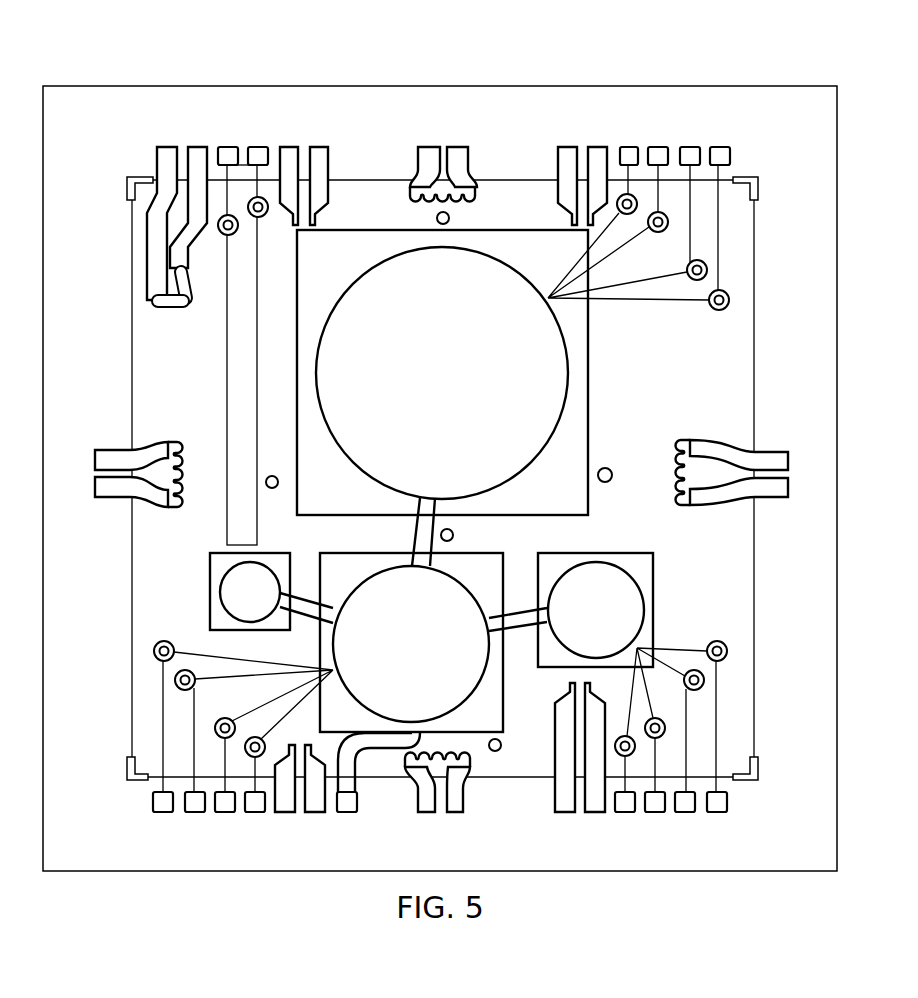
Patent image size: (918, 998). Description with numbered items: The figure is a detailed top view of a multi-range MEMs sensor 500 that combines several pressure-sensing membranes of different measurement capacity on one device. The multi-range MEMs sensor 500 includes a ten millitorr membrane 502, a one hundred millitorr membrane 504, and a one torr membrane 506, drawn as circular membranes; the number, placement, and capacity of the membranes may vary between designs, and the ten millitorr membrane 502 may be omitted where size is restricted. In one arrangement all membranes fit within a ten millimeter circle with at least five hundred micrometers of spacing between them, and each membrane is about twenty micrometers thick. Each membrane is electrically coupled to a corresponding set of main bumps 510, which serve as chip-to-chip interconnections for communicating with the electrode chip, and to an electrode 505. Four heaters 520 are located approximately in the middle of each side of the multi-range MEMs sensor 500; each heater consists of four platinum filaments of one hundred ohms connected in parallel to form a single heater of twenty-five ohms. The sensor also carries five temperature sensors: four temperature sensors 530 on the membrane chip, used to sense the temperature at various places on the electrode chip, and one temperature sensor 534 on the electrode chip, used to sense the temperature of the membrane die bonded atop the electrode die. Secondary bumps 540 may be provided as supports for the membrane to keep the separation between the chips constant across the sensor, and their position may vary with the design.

The multi-range MEMs sensor 500 is at (249, 59).
The 10 mTorr membrane 502 is at (423, 386).
The 100 mTorr membrane 504 is at (392, 657).
The electrode 505 is at (231, 605).
The 1 Torr membrane 506 is at (577, 623).
The main bumps 510 is at (628, 215).
The heaters 520 is at (455, 146).
The temperature sensors 530 is at (288, 146).
The temperature sensor 534 is at (165, 146).
The secondary bumps 540 is at (606, 467).